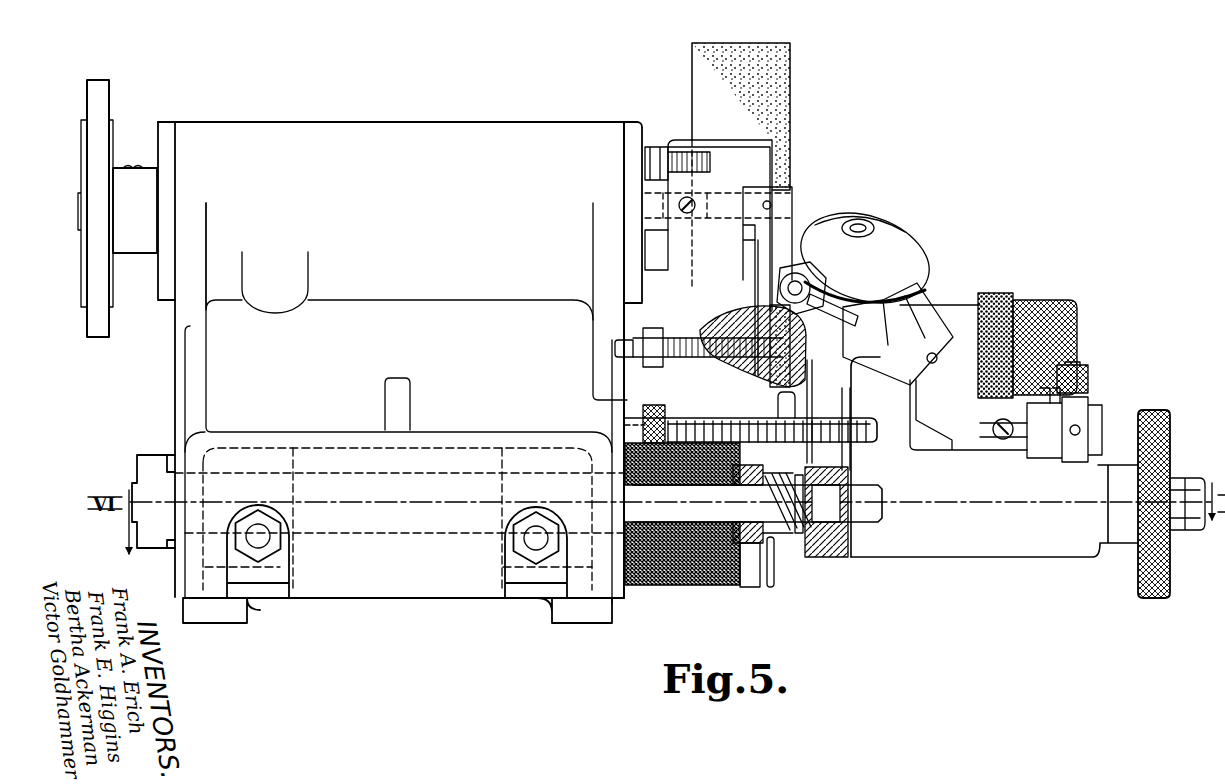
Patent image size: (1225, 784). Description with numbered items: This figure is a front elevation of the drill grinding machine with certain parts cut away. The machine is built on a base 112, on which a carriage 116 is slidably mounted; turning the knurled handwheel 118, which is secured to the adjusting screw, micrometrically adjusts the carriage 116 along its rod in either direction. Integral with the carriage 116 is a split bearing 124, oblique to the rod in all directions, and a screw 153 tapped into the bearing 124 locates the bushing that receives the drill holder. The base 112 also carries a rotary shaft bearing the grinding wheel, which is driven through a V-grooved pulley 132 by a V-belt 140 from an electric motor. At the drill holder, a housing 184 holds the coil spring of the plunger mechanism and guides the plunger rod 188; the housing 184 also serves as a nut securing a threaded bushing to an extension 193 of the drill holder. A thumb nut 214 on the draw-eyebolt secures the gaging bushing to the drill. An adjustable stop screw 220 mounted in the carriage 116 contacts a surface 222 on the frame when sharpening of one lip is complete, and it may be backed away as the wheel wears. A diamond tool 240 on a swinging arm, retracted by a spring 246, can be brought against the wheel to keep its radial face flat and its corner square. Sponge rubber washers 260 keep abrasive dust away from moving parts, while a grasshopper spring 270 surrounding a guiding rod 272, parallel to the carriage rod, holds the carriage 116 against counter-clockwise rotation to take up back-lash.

The base 112 is at (400, 596).
The carriage 116 is at (1010, 552).
The knurled handwheel 118 is at (1138, 575).
The split bearing 124 is at (890, 242).
The V-grooved pulley 132 is at (135, 245).
The V-belt 140 is at (100, 327).
The screw 153 is at (860, 225).
The housing 184 is at (884, 350).
The plunger rod 188 is at (826, 310).
The extension 193 is at (935, 308).
The thumb nut 214 is at (1088, 378).
The adjustable stop screw 220 is at (657, 417).
The surface 222 is at (622, 404).
The diamond tool 240 is at (790, 343).
The spring 246 is at (1003, 440).
The sponge rubber washers 260 is at (665, 582).
The grasshopper spring 270 is at (775, 572).
The guiding rod 272 is at (882, 515).